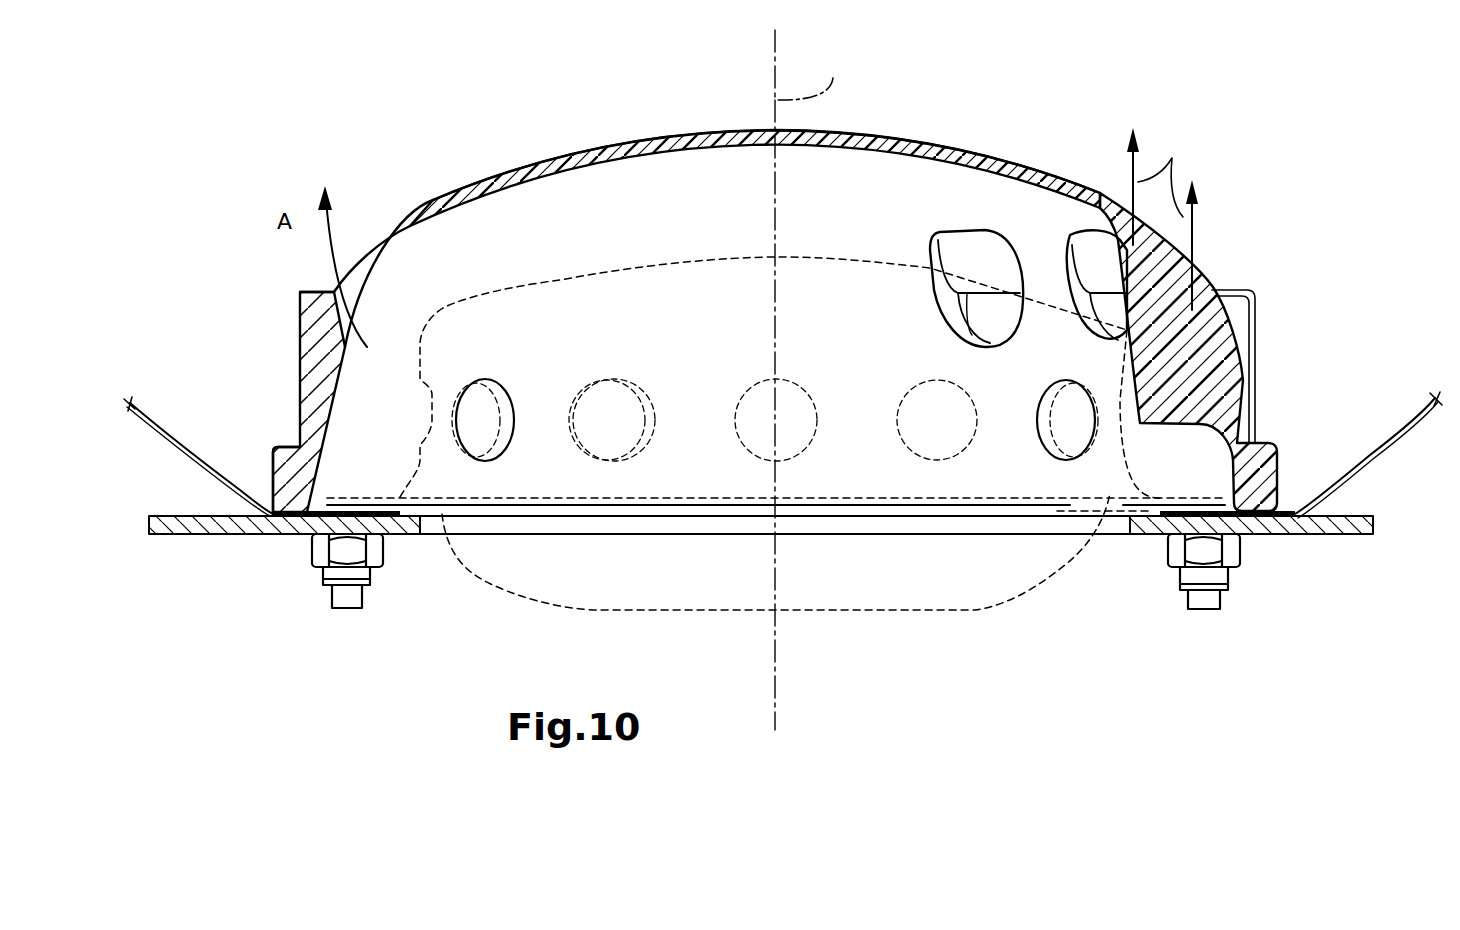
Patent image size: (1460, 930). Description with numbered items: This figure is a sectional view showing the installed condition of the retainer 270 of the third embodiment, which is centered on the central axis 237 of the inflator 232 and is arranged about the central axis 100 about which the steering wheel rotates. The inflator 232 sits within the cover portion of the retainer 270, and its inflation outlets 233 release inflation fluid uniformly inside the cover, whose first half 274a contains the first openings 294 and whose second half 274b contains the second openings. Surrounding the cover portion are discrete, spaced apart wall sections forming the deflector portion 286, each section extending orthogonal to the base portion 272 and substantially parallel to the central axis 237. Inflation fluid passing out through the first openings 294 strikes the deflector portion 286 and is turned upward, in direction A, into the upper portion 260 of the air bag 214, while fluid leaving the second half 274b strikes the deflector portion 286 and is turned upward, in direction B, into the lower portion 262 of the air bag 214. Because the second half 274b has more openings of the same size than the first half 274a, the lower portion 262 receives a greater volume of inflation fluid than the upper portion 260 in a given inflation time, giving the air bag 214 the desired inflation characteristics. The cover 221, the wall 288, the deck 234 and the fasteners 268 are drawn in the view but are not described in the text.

The central axis 100 is at (777, 68).
The cover 221 is at (657, 75).
The central axis of the inflator 237 is at (817, 65).
The first half of the cover portion 274a is at (563, 167).
The second half of the cover portion 274b is at (1035, 165).
The cover side wall 288 is at (461, 193).
The deflector portion 286 is at (303, 348).
The base portion 272 is at (270, 470).
The first openings 294 is at (310, 287).
The retainer 270 is at (1234, 216).
The inflator 232 is at (837, 257).
The inflation outlets 233 is at (954, 434).
The roof deck 234 is at (233, 523).
The upper portion of the air bag 260 is at (227, 483).
The air bag 214 is at (180, 469).
The lower portion of the air bag 262 is at (1350, 470).
The fastener nut 268 is at (1208, 600).